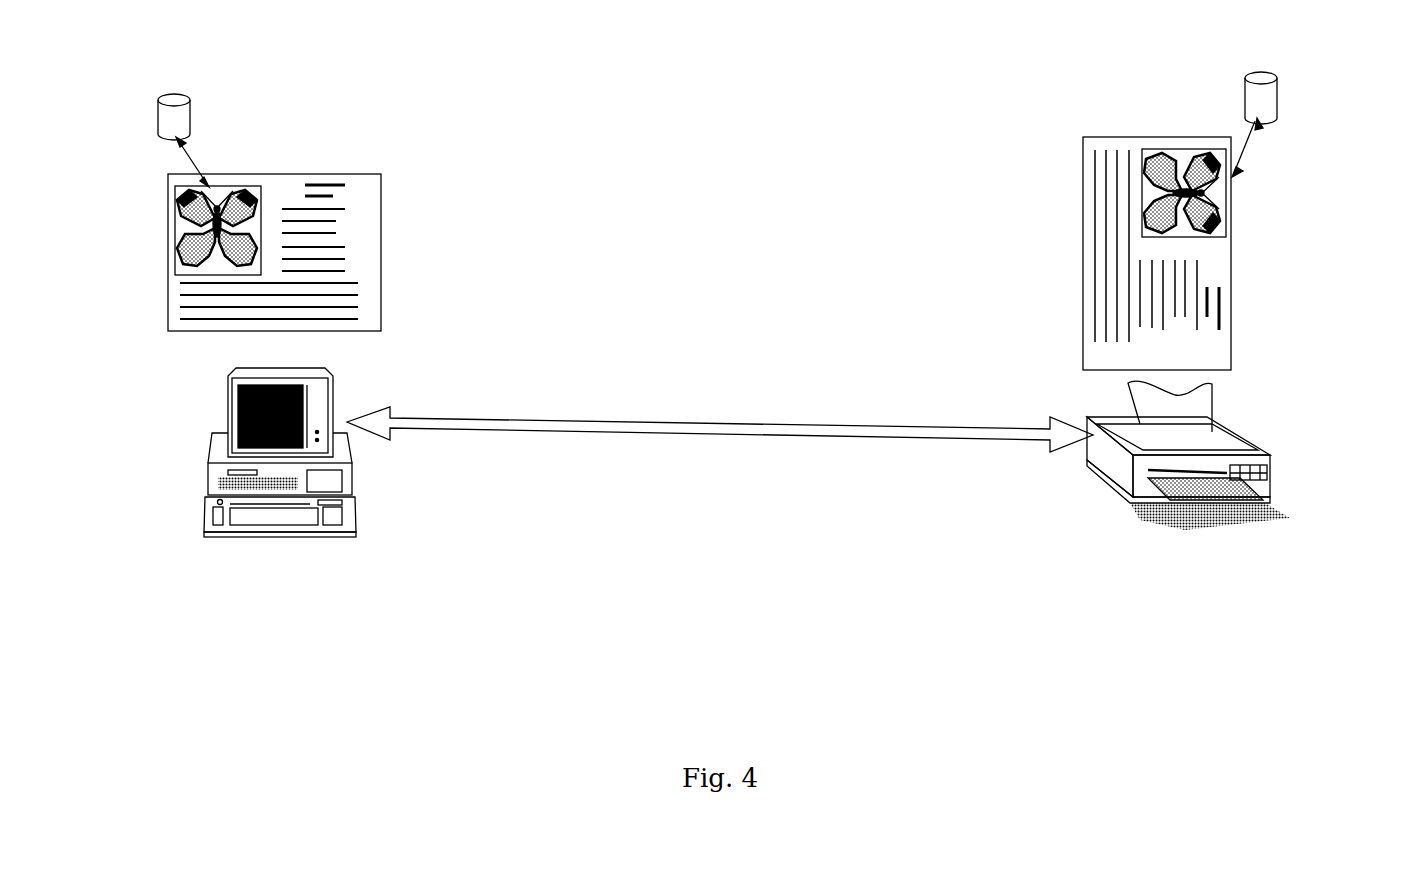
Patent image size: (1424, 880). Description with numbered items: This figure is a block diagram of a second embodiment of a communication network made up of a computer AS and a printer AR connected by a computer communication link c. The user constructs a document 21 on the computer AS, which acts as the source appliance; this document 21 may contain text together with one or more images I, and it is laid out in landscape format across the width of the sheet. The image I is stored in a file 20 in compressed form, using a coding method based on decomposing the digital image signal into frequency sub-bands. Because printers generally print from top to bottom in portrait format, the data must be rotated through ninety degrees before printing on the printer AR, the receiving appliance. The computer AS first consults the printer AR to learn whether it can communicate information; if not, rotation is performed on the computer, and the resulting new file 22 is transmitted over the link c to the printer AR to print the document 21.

The file 20 is at (190, 97).
The document 21 is at (368, 248).
The new file 22 is at (1277, 95).
The image I is at (185, 257).
The computer communication link c is at (640, 422).
The computer AS is at (332, 478).
The printer AR is at (1220, 445).